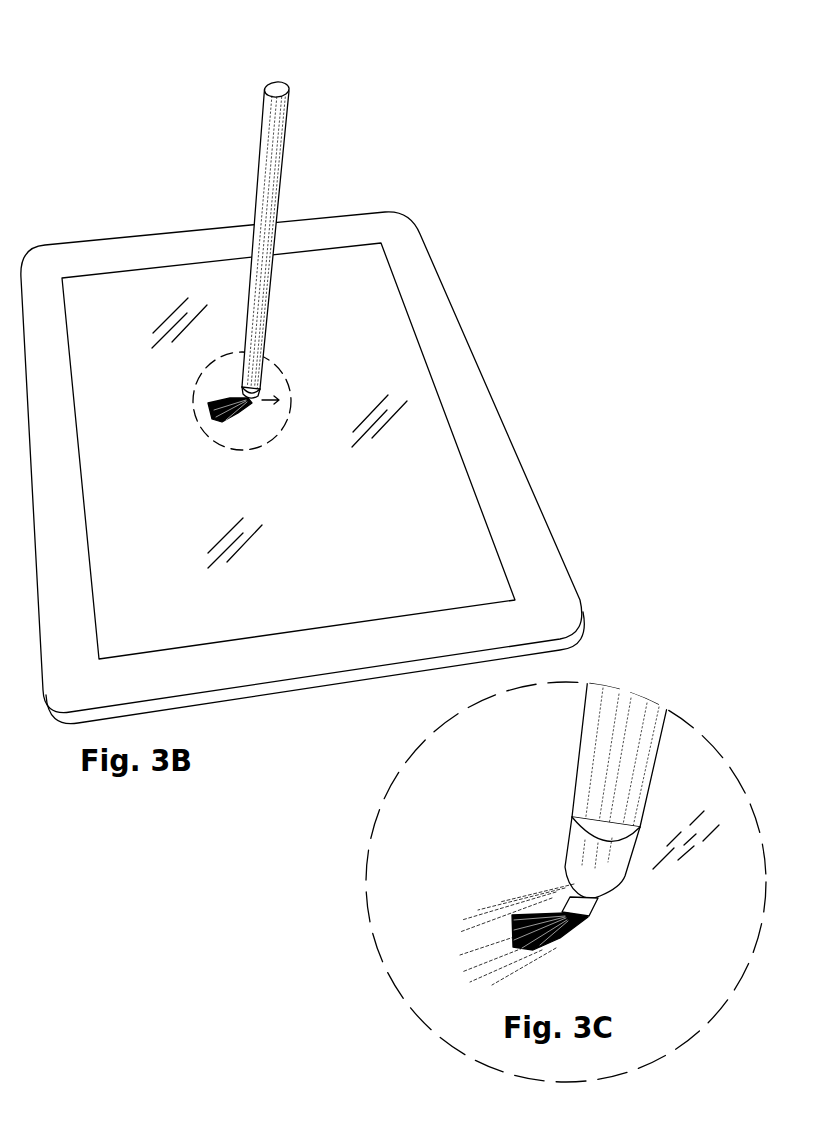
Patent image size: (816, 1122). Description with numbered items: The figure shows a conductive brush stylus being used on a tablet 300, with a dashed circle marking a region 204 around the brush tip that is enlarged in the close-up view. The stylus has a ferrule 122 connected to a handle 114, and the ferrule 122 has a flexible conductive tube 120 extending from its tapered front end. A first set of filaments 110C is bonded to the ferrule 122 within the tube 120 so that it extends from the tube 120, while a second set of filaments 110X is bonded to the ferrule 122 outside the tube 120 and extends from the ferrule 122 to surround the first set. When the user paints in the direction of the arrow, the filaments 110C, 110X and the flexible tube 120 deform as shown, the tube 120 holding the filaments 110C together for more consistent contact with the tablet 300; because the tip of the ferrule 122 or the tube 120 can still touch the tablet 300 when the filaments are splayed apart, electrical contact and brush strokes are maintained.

In FIG. 3B, the handle 114 is at (274, 157).
In FIG. 3C, the handle 114 is at (592, 775).
In FIG. 3B, the region 204 is at (279, 373).
In FIG. 3C, the region 204 is at (681, 718).
In FIG. 3B, the tablet 300 is at (509, 482).
In FIG. 3C, the ferrule 122 is at (577, 850).
In FIG. 3C, the second set of filaments 110X is at (500, 905).
In FIG. 3C, the flexible conductive tube 120 is at (583, 905).
In FIG. 3C, the first set of filaments 110C is at (553, 940).